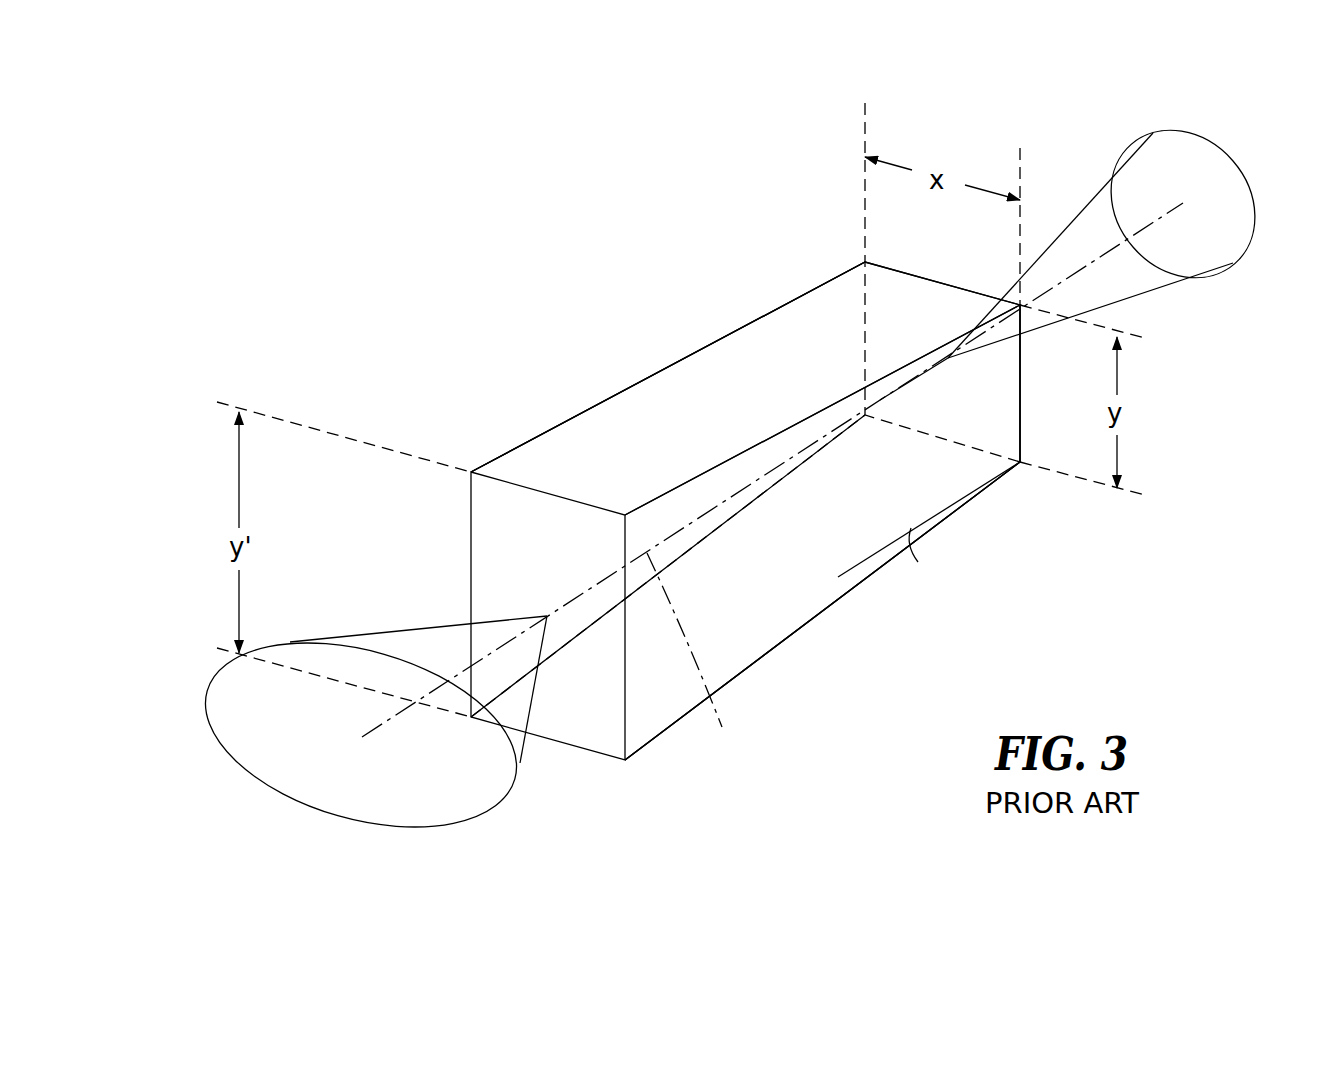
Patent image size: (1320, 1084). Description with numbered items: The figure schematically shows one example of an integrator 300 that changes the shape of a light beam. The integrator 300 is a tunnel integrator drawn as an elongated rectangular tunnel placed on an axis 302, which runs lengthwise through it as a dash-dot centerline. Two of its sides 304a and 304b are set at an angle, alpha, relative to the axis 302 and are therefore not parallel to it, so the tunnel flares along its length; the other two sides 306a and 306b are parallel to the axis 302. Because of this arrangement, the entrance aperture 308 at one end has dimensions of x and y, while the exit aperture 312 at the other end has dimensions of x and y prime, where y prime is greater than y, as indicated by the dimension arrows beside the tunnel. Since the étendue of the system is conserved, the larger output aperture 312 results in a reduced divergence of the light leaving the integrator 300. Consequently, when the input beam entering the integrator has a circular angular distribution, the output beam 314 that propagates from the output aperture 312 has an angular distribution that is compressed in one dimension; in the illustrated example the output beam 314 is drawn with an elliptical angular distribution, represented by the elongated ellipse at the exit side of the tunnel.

The integrator 300 is at (635, 382).
The axis 302 is at (698, 658).
The side 304a is at (747, 323).
The side 304b is at (796, 603).
The side 306a is at (747, 647).
The side 306b is at (547, 460).
The entrance aperture 308 is at (903, 288).
The exit aperture 312 is at (1238, 262).
The output beam 314 is at (350, 823).